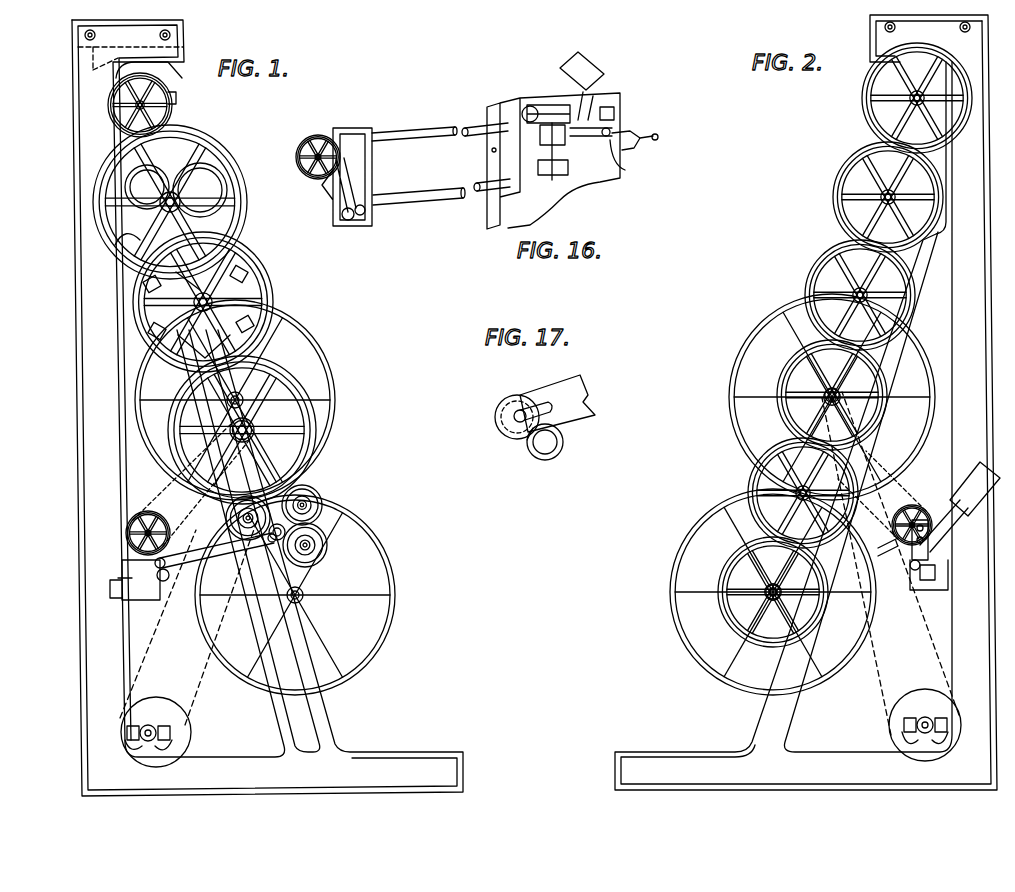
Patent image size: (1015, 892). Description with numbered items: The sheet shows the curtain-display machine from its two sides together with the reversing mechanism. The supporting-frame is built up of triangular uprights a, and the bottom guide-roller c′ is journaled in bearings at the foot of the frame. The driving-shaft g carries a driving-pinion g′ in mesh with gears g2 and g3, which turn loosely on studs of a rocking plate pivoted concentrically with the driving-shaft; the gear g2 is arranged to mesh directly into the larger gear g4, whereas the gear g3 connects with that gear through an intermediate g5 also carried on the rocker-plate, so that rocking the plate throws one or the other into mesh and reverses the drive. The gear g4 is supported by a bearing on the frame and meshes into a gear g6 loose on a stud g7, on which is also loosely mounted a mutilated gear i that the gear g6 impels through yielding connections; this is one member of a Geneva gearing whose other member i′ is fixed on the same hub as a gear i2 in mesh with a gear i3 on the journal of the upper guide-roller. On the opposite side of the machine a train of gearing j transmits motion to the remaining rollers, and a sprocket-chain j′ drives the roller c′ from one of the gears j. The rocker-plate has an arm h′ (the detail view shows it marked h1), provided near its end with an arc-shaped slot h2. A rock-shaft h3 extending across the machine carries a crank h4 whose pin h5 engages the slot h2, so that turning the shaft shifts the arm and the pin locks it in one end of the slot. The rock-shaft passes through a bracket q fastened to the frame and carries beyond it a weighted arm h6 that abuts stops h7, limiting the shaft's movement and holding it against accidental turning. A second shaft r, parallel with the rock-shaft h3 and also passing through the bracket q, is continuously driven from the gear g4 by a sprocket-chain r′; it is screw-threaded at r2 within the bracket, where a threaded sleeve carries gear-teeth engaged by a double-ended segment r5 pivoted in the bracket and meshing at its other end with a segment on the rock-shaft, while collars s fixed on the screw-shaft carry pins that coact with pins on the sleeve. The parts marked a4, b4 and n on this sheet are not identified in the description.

In FIG. 1, the triangular uprights a is at (320, 708).
In FIG. 2, the triangular uprights a is at (811, 402).
In FIG. 1, the small gear a4 is at (135, 195).
In FIG. 1, the large wheel b4 is at (320, 370).
In FIG. 2, the large wheel b4 is at (802, 494).
In FIG. 1, the guide-roller c′ is at (167, 732).
In FIG. 2, the guide-roller c′ is at (925, 725).
In FIG. 1, the driving-shaft g is at (272, 545).
In FIG. 1, the driving-pinion g′ is at (236, 540).
In FIG. 1, the gear g2 is at (245, 540).
In FIG. 1, the gear g3 is at (328, 550).
In FIG. 1, the larger gear g4 is at (318, 440).
In FIG. 1, the intermediate gear g5 is at (322, 500).
In FIG. 1, the gear g6 is at (203, 315).
In FIG. 1, the stud g7 is at (235, 290).
In FIG. 1, the arm h′ is at (170, 572).
In FIG. 17, the plate h1 is at (580, 398).
In FIG. 17, the arc-shaped slot h2 is at (533, 410).
In FIG. 1, the rock-shaft h3 is at (135, 568).
In FIG. 16, the rock-shaft h3 is at (418, 197).
In FIG. 17, the rock-shaft h3 is at (565, 442).
In FIG. 2, the rock-shaft h3 is at (905, 552).
In FIG. 16, the crank h4 is at (345, 224).
In FIG. 17, the crank h4 is at (530, 445).
In FIG. 2, the crank h4 is at (948, 540).
In FIG. 1, the pin h5 is at (130, 548).
In FIG. 16, the pin h5 is at (338, 204).
In FIG. 17, the pin h5 is at (512, 414).
In FIG. 16, the weighted arm h6 is at (592, 92).
In FIG. 2, the weighted arm h6 is at (955, 512).
In FIG. 16, the stops h7 is at (626, 136).
In FIG. 1, the mutilated gear i is at (270, 300).
In FIG. 1, the Geneva gearing member i′ is at (215, 192).
In FIG. 1, the gear i2 is at (208, 150).
In FIG. 1, the gear i3 is at (172, 100).
In FIG. 2, the train of gearing j is at (862, 158).
In FIG. 1, the sprocket-chain j′ is at (189, 621).
In FIG. 2, the sprocket-chain j′ is at (872, 690).
In FIG. 1, the shaft n is at (185, 238).
In FIG. 16, the bracket q is at (612, 168).
In FIG. 2, the bracket q is at (930, 582).
In FIG. 1, the shaft r is at (128, 530).
In FIG. 16, the shaft r is at (425, 136).
In FIG. 2, the shaft r is at (903, 517).
In FIG. 1, the sprocket-chain r′ is at (193, 482).
In FIG. 16, the sprocket-chain r′ is at (318, 135).
In FIG. 2, the sprocket-chain r′ is at (930, 500).
In FIG. 16, the screw-threaded portion r2 is at (565, 112).
In FIG. 16, the double-ended segment r5 is at (563, 151).
In FIG. 16, the collars s is at (612, 108).